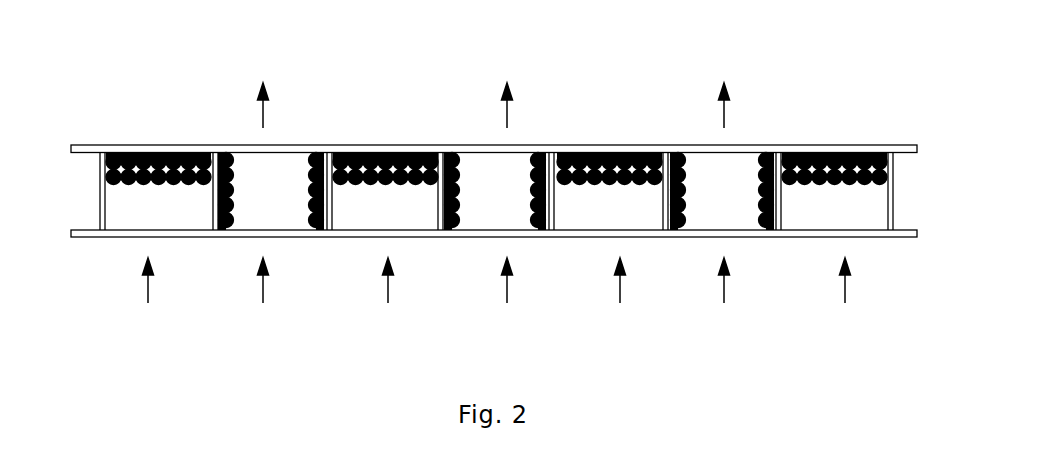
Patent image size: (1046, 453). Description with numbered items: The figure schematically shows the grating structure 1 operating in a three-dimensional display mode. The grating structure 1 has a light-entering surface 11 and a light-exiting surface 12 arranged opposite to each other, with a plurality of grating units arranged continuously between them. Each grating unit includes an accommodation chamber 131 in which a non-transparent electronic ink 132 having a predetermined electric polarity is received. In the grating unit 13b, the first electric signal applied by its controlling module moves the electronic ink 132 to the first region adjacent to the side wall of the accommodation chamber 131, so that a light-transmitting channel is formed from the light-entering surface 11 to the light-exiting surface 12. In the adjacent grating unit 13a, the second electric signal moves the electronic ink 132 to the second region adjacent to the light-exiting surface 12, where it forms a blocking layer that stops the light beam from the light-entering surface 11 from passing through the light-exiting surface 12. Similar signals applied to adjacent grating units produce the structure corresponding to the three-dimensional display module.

The filter assembly 1 is at (478, 67).
The light-entering surface 11 is at (760, 237).
The light-exiting surface 12 is at (801, 147).
The grating unit 13a is at (145, 217).
The grating unit 13b is at (289, 215).
The accommodation chamber 131 is at (715, 186).
The non-transparent electronic ink 132 is at (314, 158).